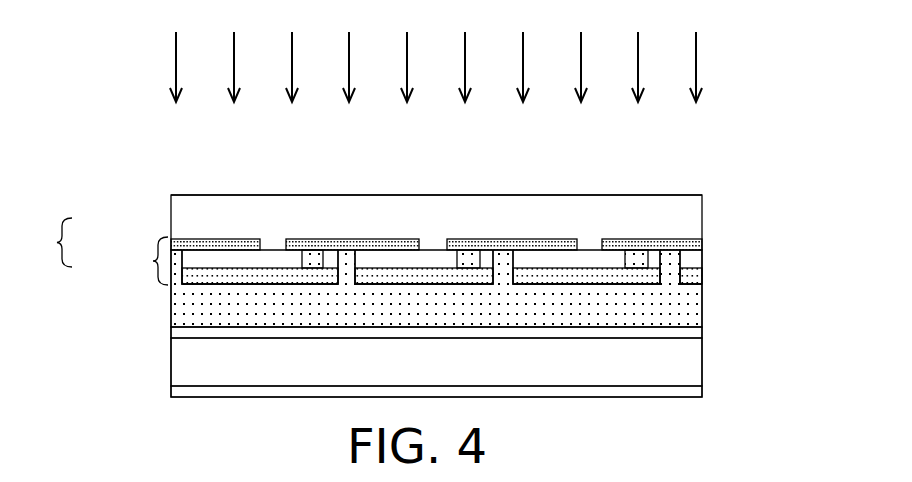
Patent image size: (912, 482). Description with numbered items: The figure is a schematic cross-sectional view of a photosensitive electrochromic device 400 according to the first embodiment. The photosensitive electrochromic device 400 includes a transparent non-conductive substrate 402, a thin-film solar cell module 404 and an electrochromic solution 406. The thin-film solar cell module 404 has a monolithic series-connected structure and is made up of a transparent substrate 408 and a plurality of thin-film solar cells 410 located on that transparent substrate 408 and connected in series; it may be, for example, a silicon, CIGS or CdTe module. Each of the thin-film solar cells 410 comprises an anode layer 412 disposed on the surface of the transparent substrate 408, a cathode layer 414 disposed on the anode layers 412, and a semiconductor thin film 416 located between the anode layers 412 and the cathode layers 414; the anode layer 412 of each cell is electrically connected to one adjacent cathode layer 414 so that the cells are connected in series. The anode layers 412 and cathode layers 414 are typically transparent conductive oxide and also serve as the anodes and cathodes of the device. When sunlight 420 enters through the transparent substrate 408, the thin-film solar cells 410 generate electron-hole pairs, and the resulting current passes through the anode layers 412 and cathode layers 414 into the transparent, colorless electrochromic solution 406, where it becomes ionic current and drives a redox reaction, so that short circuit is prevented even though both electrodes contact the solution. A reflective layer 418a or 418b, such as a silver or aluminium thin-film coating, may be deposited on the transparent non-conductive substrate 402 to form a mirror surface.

The photosensitive electrochromic device 400 is at (188, 157).
The transparent non-conductive substrate 402 is at (692, 377).
The thin-film solar cell module 404 is at (43, 242).
The electrochromic solution 406 is at (690, 305).
The transparent substrate 408 is at (182, 215).
The thin-film solar cells 410 is at (153, 261).
The anode layers 412 is at (382, 245).
The cathode layers 414 is at (428, 275).
The semiconductor thin films 416 is at (456, 258).
The reflective layer 418a is at (173, 333).
The reflective layer 418b is at (173, 390).
The sunlight 420 is at (696, 53).